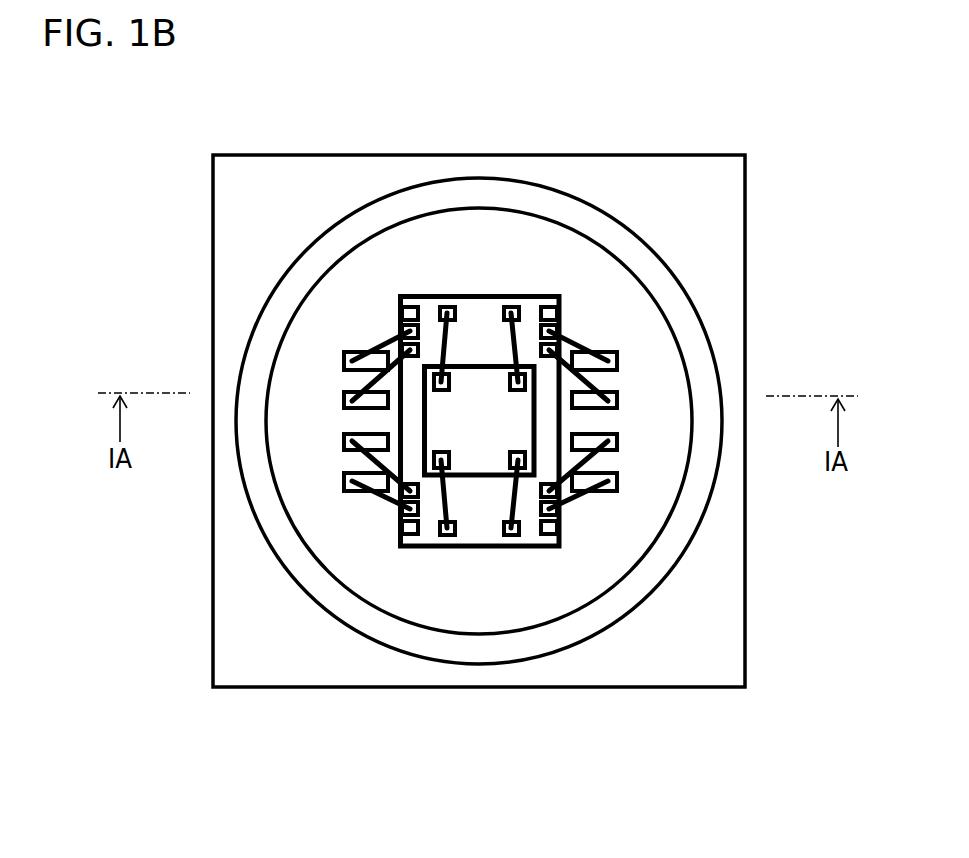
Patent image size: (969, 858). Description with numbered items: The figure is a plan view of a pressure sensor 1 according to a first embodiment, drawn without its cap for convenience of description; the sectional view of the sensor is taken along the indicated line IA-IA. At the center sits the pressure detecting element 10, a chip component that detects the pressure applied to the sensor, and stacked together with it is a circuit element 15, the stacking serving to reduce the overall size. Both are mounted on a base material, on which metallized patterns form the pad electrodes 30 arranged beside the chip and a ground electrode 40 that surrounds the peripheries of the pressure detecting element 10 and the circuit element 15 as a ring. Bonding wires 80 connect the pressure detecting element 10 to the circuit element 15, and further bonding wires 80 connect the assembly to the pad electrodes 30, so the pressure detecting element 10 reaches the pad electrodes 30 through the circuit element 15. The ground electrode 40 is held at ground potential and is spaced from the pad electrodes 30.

The pressure sensor 1 is at (698, 102).
The pressure detecting element 10 is at (480, 388).
The circuit element 15 is at (488, 313).
The pad electrodes 30 is at (347, 348).
The ground electrode 40 is at (580, 622).
The bonding wires 80 is at (382, 353).